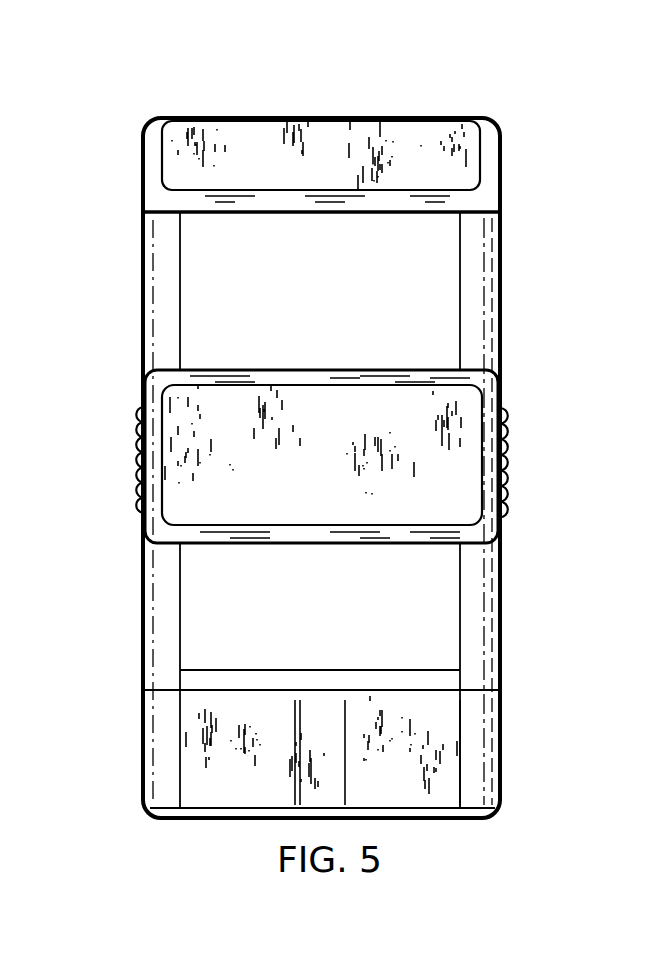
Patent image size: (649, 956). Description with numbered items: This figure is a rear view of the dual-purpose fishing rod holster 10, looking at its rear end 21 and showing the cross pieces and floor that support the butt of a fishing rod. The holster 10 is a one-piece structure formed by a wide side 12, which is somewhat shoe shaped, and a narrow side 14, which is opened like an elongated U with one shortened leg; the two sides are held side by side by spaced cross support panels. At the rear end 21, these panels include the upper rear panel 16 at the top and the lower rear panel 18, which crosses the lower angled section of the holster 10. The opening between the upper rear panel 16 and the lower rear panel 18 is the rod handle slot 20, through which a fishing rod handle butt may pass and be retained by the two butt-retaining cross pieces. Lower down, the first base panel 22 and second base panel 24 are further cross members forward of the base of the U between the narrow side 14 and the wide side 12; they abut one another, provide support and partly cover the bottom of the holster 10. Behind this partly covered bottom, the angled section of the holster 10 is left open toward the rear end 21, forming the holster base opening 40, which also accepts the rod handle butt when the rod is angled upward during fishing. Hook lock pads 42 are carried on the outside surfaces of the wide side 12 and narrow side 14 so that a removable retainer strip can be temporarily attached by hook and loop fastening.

The dual-purpose fishing rod holster 10 is at (233, 106).
The wide side 12 is at (166, 288).
The narrow side 14 is at (473, 630).
The upper rear panel 16 is at (335, 150).
The lower rear panel 18 is at (332, 412).
The rod handle slot 20 is at (428, 265).
The rear end 21 is at (290, 822).
The first base panel 22 is at (376, 680).
The second base panel 24 is at (228, 789).
The holster base opening 40 is at (213, 608).
The hook lock pads 42 is at (138, 451).